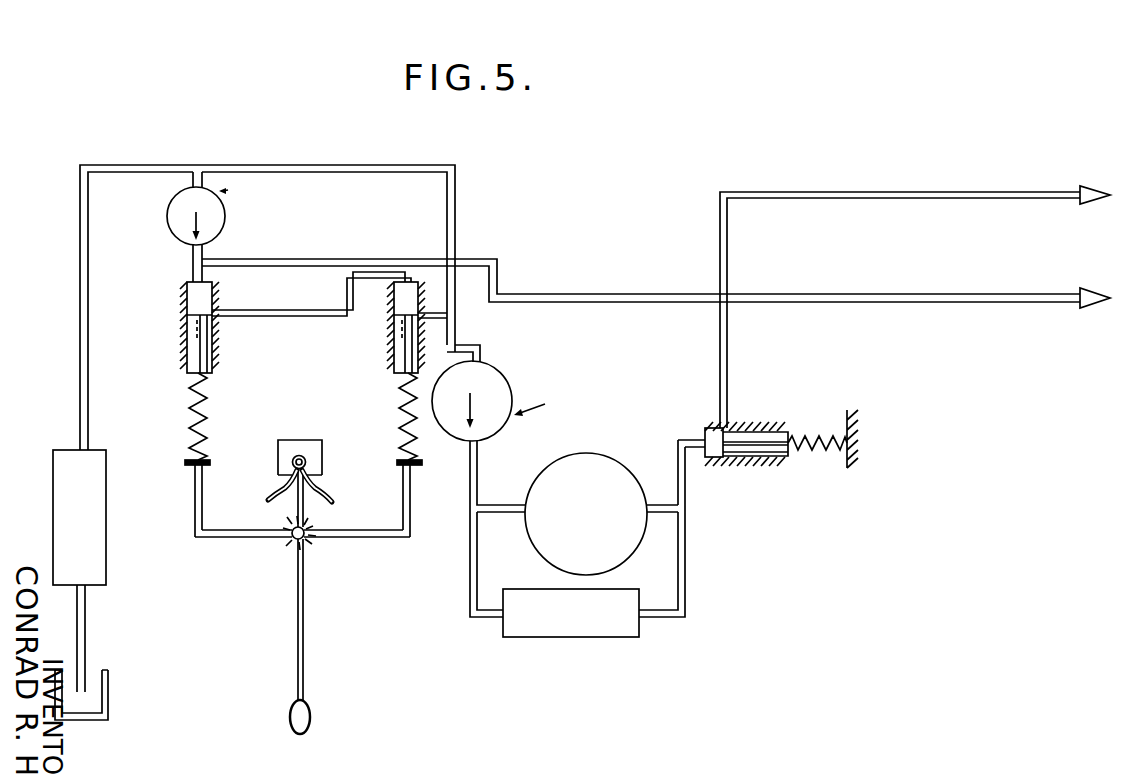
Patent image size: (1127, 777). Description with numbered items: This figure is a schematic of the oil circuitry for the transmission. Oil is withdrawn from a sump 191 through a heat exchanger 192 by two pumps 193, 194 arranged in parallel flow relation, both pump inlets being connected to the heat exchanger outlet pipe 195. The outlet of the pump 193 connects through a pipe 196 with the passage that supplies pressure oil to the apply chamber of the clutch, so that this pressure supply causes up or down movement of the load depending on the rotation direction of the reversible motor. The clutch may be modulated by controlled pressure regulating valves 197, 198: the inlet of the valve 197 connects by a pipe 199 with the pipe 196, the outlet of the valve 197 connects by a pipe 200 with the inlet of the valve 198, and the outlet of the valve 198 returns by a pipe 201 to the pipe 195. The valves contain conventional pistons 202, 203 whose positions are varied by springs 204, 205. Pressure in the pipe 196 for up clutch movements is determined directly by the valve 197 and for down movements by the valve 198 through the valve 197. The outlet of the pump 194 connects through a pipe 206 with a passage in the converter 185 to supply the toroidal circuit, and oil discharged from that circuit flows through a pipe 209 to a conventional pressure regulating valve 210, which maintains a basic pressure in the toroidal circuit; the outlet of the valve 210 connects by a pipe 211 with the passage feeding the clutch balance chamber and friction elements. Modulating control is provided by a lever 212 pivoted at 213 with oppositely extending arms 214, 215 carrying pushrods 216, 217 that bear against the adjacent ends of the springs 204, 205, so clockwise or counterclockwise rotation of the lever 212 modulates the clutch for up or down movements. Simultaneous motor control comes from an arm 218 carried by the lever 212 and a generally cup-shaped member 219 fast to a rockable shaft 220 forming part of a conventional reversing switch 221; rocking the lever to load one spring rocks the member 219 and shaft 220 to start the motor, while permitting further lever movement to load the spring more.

The converter 185 is at (581, 453).
The sump 191 is at (108, 696).
The heat exchanger 192 is at (113, 517).
The pump 193 is at (166, 217).
The pump 194 is at (498, 368).
The heat exchanger outlet pipe 195 is at (78, 340).
The pipe 196 is at (318, 258).
The pressure regulating valve 197 is at (176, 338).
The pressure regulating valve 198 is at (387, 349).
The pipe 199 is at (190, 271).
The pipe 200 is at (283, 319).
The pipe 201 is at (437, 308).
The piston 202 is at (188, 357).
The piston 203 is at (402, 360).
The spring 204 is at (192, 420).
The spring 205 is at (402, 412).
The pipe 206 is at (478, 450).
The pipe 209 is at (658, 504).
The pressure regulating valve 210 is at (758, 465).
The pipe 211 is at (729, 352).
The lever 212 is at (304, 598).
The pivot 213 is at (290, 543).
The arm 214 is at (215, 539).
The arm 215 is at (370, 539).
The pushrod 216 is at (220, 503).
The pushrod 217 is at (411, 491).
The arm 218 is at (304, 515).
The cup-shaped member 219 is at (321, 491).
The rockable shaft 220 is at (301, 455).
The reversing switch 221 is at (278, 440).